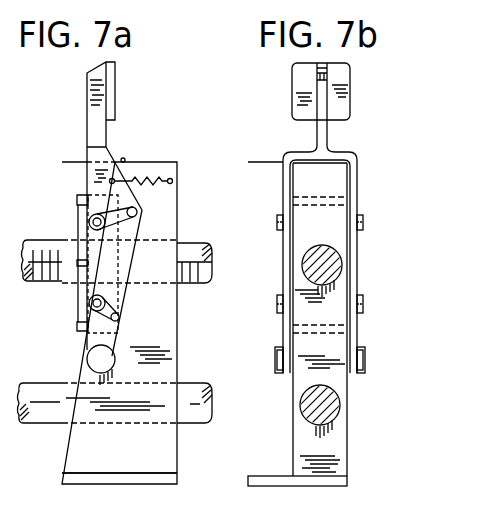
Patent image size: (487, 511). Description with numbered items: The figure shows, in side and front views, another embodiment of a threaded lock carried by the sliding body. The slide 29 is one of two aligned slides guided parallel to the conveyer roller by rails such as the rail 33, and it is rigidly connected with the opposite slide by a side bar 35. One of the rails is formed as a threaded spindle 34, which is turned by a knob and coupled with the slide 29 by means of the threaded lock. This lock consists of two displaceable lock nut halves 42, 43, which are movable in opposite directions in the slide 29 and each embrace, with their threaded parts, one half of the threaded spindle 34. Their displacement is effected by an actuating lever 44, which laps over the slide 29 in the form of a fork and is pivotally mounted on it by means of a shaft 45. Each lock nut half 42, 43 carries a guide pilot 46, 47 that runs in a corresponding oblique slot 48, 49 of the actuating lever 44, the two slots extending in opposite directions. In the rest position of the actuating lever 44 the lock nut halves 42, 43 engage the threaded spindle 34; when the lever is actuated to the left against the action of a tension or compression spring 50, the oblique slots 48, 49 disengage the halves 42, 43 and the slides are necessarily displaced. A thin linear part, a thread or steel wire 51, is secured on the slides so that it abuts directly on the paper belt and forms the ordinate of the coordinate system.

In FIG. 7a, the slide 29 is at (72, 180).
In FIG. 7b, the slide 29 is at (328, 448).
In FIG. 7a, the rail 33 is at (185, 410).
In FIG. 7b, the rail 33 is at (315, 408).
In FIG. 7a, the threaded spindle 34 is at (192, 260).
In FIG. 7b, the threaded spindle 34 is at (312, 260).
In FIG. 7a, the side bar 35 is at (157, 478).
In FIG. 7b, the side bar 35 is at (297, 481).
In FIG. 7a, the lock nut half 42 is at (82, 228).
In FIG. 7b, the lock nut half 42 is at (327, 228).
In FIG. 7a, the lock nut half 43 is at (82, 287).
In FIG. 7b, the lock nut half 43 is at (337, 290).
In FIG. 7a, the actuating lever 44 is at (90, 98).
In FIG. 7b, the actuating lever 44 is at (338, 110).
In FIG. 7a, the shaft 45 is at (97, 362).
In FIG. 7b, the shaft 45 is at (362, 363).
In FIG. 7a, the guide pilot 46 is at (90, 218).
In FIG. 7b, the guide pilot 46 is at (360, 223).
In FIG. 7a, the guide pilot 47 is at (90, 303).
In FIG. 7b, the guide pilot 47 is at (362, 303).
In FIG. 7a, the oblique slot 48 is at (142, 210).
In FIG. 7a, the oblique slot 49 is at (115, 315).
In FIG. 7a, the spring 50 is at (153, 172).
In FIG. 7a, the steel wire 51 is at (123, 157).
In FIG. 7b, the steel wire 51 is at (262, 160).